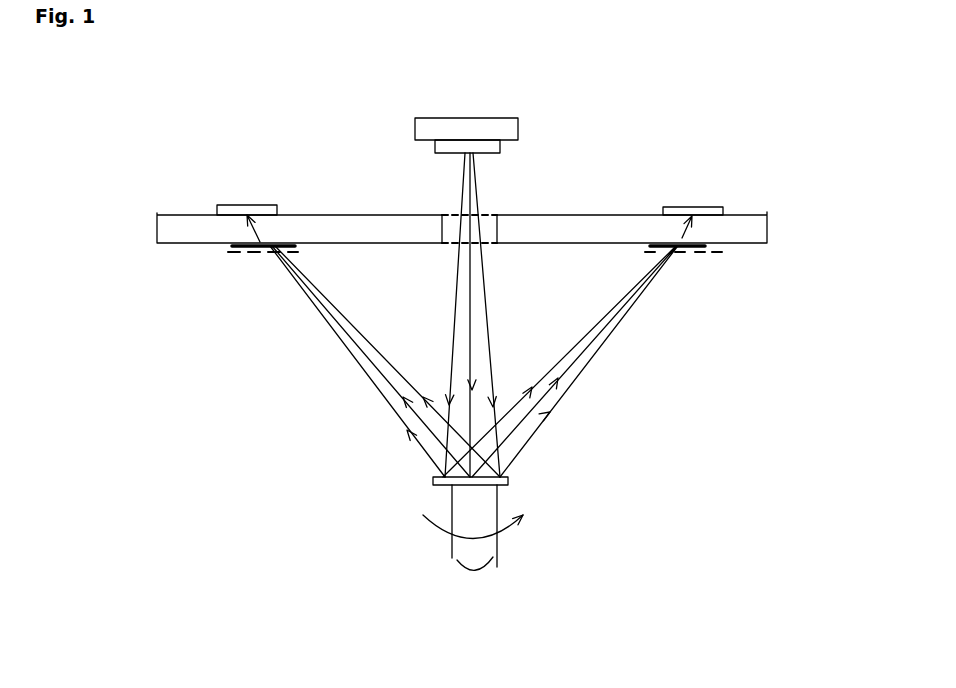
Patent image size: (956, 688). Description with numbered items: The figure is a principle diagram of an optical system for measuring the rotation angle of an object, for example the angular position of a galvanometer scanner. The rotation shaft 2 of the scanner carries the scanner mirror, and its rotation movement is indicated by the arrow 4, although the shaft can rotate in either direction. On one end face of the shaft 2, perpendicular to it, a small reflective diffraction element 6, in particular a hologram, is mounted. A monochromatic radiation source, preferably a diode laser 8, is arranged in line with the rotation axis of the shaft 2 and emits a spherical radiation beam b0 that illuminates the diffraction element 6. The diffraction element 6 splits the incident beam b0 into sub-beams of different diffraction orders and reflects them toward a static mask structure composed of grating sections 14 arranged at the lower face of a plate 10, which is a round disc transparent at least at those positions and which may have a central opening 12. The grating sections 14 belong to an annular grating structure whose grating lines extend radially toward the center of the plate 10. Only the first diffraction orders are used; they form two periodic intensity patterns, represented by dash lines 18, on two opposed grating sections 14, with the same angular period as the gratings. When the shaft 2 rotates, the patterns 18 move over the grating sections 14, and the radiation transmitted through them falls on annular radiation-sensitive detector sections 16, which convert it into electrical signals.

The rotation shaft 2 is at (477, 549).
The arrow 4 is at (487, 528).
The reflective diffraction element 6 is at (508, 481).
The diode laser 8 is at (518, 131).
The plate 10 is at (175, 232).
The central opening 12 is at (452, 232).
The grating sections 14 is at (240, 253).
The detector sections 16 is at (242, 200).
The periodic intensity patterns 18 is at (252, 253).
The radiation beam b0 is at (478, 348).